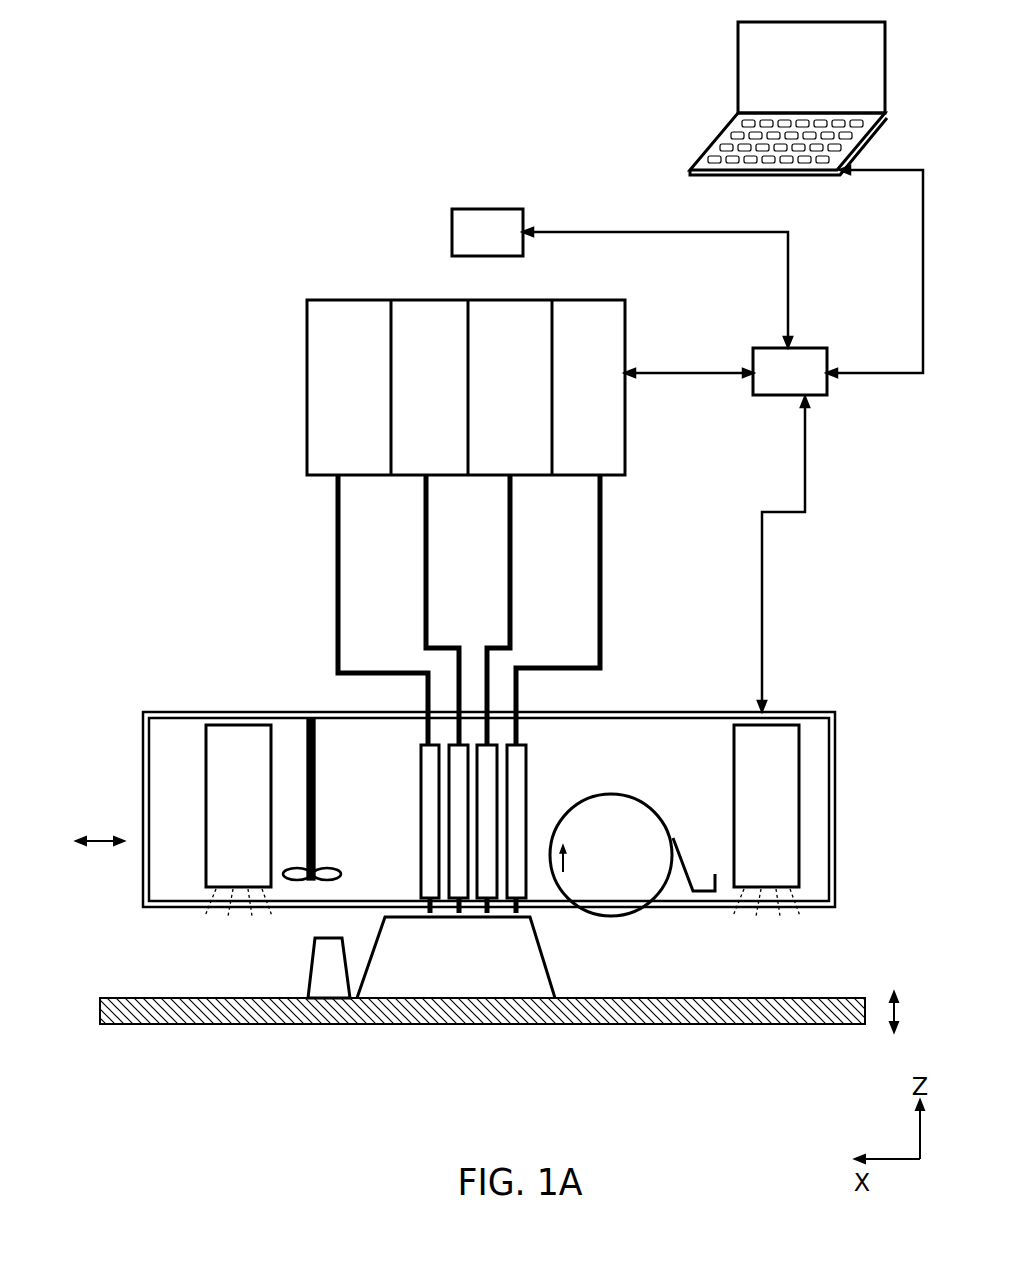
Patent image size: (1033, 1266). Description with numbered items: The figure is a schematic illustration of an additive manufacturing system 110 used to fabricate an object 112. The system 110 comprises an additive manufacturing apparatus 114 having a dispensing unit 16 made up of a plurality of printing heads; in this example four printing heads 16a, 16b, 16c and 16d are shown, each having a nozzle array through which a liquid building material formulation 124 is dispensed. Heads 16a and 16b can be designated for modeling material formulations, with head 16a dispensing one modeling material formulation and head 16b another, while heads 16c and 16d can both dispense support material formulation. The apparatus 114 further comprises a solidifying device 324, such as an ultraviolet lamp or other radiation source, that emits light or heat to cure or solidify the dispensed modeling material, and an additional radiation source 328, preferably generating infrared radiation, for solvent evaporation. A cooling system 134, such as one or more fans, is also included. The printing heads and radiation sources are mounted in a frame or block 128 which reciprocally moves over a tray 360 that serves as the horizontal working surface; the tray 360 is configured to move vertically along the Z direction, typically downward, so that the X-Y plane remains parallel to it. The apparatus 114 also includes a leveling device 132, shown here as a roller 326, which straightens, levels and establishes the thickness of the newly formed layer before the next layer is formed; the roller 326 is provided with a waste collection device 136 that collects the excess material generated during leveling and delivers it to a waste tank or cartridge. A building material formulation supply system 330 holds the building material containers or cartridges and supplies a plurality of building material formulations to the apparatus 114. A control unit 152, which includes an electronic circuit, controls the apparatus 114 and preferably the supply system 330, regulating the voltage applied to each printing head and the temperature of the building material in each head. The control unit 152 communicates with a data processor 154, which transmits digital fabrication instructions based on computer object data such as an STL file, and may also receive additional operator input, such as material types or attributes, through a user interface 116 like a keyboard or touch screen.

The system 110 is at (305, 32).
The additive manufacturing apparatus 114 is at (126, 623).
The user interface 116 is at (487, 232).
The control unit 152 is at (790, 371).
The data processor 154 is at (792, 86).
The building material formulation supply system 330 is at (278, 327).
The frame or block 128 is at (797, 710).
The leveling device 132 is at (623, 783).
The roller 326 is at (614, 867).
The waste collection device 136 is at (702, 900).
The cooling system 134 is at (306, 757).
The radiation source 328 is at (219, 829).
The solidifying device 324 is at (746, 829).
The dispensing unit 16 is at (428, 791).
The printing head 16a is at (518, 823).
The printing head 16b is at (488, 773).
The printing head 16c is at (457, 837).
The printing head 16d is at (427, 862).
The liquid building material formulation 124 is at (530, 921).
The object 112 is at (418, 987).
The tray 360 is at (193, 1007).